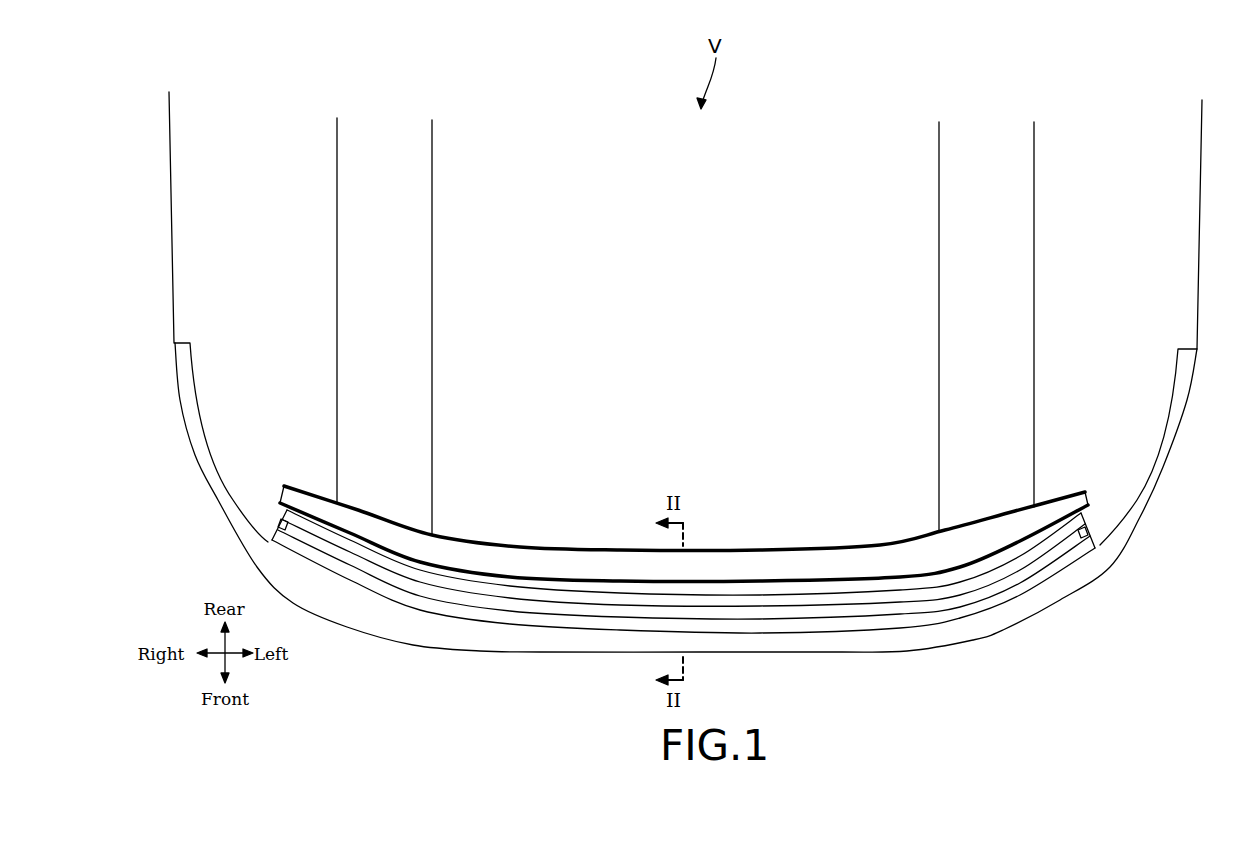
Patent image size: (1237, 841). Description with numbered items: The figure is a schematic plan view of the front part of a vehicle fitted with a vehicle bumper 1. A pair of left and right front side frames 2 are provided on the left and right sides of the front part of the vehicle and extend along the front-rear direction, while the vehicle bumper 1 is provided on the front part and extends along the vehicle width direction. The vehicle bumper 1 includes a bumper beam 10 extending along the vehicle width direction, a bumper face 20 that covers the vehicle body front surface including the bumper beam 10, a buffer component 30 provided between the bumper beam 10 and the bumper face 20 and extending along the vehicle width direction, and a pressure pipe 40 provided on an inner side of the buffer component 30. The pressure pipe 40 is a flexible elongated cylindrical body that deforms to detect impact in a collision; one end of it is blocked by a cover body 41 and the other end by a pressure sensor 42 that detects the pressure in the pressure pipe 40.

The vehicle bumper 1 is at (1010, 650).
The front side frames 2 is at (415, 394).
The bumper beam 10 is at (848, 565).
The bumper face 20 is at (872, 645).
The buffer component 30 is at (747, 613).
The pressure pipe 40 is at (813, 600).
The cover body 41 is at (281, 522).
The pressure sensor 42 is at (1086, 530).